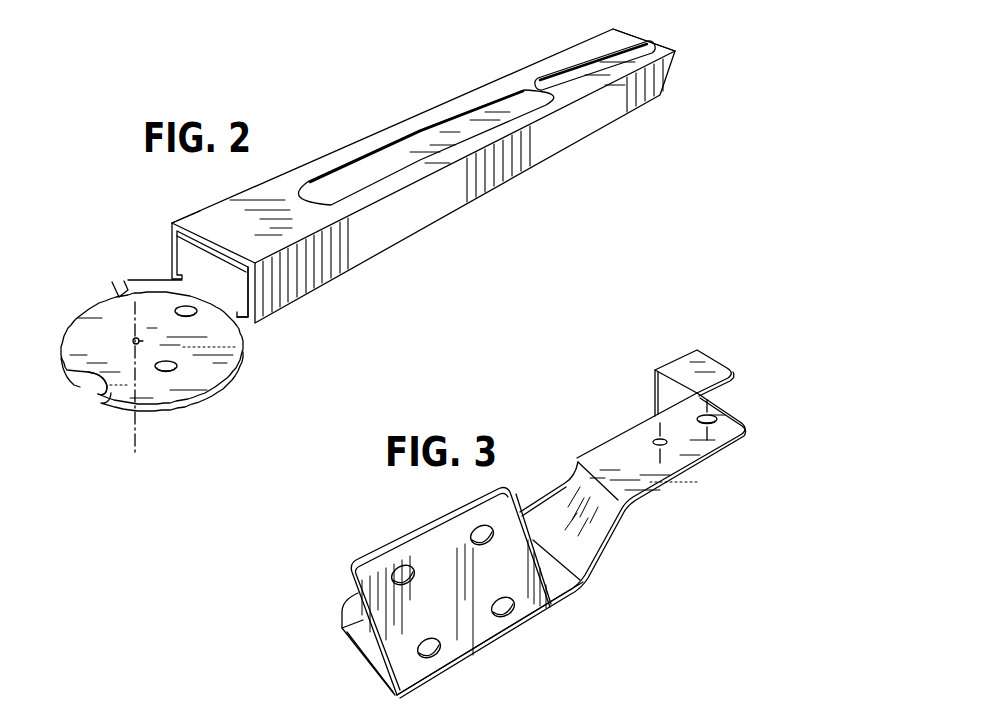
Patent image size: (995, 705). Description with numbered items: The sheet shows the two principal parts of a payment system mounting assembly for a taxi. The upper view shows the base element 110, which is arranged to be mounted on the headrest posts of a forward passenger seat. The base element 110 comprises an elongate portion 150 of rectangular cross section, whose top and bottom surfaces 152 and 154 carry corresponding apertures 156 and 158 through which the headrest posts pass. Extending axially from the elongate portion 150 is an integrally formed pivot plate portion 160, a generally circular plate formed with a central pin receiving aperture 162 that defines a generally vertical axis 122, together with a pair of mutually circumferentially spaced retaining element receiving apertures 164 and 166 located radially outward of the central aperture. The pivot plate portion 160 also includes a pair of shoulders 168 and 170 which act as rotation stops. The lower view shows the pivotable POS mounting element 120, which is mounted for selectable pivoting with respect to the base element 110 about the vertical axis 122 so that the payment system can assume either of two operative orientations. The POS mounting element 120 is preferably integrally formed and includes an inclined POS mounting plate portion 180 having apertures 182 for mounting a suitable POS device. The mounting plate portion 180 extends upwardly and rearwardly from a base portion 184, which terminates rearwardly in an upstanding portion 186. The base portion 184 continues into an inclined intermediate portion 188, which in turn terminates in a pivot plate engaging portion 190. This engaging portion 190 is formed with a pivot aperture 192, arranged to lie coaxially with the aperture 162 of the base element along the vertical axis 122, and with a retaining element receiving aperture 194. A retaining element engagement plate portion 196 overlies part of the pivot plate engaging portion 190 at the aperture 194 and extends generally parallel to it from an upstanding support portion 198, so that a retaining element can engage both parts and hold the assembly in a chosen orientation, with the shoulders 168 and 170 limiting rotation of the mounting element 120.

In FIG. 2, the base element 110 is at (330, 298).
In FIG. 2, the vertical axis 122 is at (123, 302).
In FIG. 2, the elongate portion 150 is at (520, 80).
In FIG. 2, the top surface 152 is at (207, 223).
In FIG. 2, the bottom surface 154 is at (232, 285).
In FIG. 2, the aperture 156 is at (350, 177).
In FIG. 2, the aperture 158 is at (567, 78).
In FIG. 2, the pivot plate portion 160 is at (80, 333).
In FIG. 2, the central pin receiving aperture 162 is at (143, 341).
In FIG. 2, the retaining element receiving aperture 164 is at (197, 314).
In FIG. 2, the retaining element receiving aperture 166 is at (175, 372).
In FIG. 2, the shoulder 168 is at (90, 388).
In FIG. 2, the shoulder 170 is at (117, 285).
In FIG. 3, the pivotable POS mounting element 120 is at (615, 553).
In FIG. 3, the inclined POS mounting plate portion 180 is at (423, 548).
In FIG. 3, the apertures 182 is at (484, 546).
In FIG. 3, the base portion 184 is at (372, 652).
In FIG. 3, the upstanding portion 186 is at (350, 613).
In FIG. 3, the inclined intermediate portion 188 is at (607, 515).
In FIG. 3, the pivot plate engaging portion 190 is at (677, 463).
In FIG. 3, the pivot aperture 192 is at (655, 441).
In FIG. 3, the retaining element receiving aperture 194 is at (716, 416).
In FIG. 3, the retaining element engagement plate portion 196 is at (718, 368).
In FIG. 3, the upstanding support portion 198 is at (656, 393).